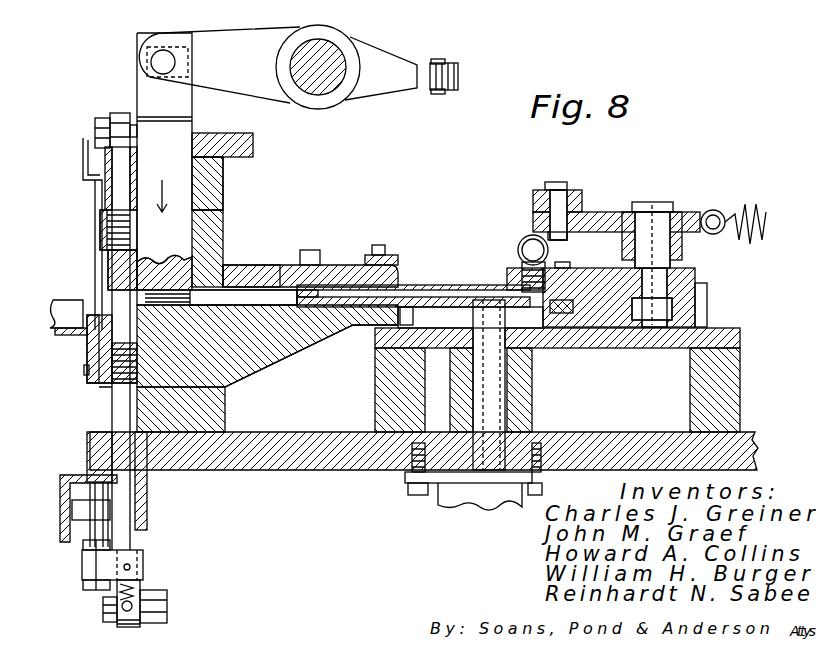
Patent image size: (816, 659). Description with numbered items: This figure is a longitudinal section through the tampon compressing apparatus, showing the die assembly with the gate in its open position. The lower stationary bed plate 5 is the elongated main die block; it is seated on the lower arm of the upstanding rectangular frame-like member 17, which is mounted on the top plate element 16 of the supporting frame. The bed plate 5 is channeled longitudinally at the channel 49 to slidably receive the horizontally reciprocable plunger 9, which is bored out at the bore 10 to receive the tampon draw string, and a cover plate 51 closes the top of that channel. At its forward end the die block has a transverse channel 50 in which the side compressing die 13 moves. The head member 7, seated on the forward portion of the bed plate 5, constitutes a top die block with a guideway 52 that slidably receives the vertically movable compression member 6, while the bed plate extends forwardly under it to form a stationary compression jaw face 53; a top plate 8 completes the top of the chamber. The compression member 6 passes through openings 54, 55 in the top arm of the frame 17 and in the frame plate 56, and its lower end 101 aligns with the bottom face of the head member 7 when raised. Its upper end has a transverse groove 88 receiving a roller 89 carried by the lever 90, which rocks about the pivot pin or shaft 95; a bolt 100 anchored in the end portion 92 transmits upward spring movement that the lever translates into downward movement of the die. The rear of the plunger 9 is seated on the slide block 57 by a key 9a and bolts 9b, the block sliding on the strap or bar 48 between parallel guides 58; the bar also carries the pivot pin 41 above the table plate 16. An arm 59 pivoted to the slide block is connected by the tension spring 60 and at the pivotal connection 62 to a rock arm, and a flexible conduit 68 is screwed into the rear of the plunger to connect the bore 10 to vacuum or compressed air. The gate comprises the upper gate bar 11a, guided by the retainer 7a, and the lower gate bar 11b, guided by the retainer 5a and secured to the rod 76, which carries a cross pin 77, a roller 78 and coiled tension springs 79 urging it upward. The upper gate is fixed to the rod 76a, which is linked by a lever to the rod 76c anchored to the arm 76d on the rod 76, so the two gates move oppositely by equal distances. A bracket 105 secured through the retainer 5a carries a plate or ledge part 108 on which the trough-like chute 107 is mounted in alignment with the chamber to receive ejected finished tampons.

The bed plate 5 is at (300, 345).
The retainer 5a is at (95, 390).
The compression member 6 is at (164, 161).
The head member 7 is at (188, 222).
The retainer 7a is at (101, 222).
The top plate 8 is at (328, 263).
The plunger 9 is at (424, 284).
The key 9a is at (545, 315).
The bolts 9b is at (568, 262).
The bore 10 is at (457, 288).
The upper gate bar 11a is at (108, 258).
The lower gate bar 11b is at (170, 345).
The side compressing die 13 is at (160, 306).
The top plate element 16 is at (655, 432).
The rectangular frame-like member 17 is at (226, 184).
The pivot pin 41 is at (507, 398).
The strap or bar 48 is at (632, 348).
The longitudinal channel 49 is at (290, 263).
The transverse channel 50 is at (215, 265).
The cover plate 51 is at (340, 262).
The guideway 52 is at (226, 218).
The stationary compression jaw face 53 is at (190, 306).
The opening 54 is at (226, 175).
The opening 55 is at (195, 133).
The frame plate 56 is at (255, 150).
The slide block 57 is at (582, 348).
The parallel guides 58 is at (707, 300).
The arm 59 is at (600, 212).
The tension spring 60 is at (725, 212).
The pivotal connection 62 is at (565, 183).
The flexible conduit 68 is at (522, 236).
The rod 76 is at (135, 492).
The rod 76a is at (120, 118).
The rod 76c is at (93, 197).
The arm 76d is at (145, 555).
The cross pin 77 is at (120, 620).
The roller 78 is at (160, 590).
The coiled tension springs 79 is at (118, 595).
The transverse groove 88 is at (150, 55).
The roller 89 is at (152, 68).
The lever 90 is at (250, 90).
The end portion 92 is at (460, 73).
The pivot pin or shaft 95 is at (322, 45).
The bolt 100 is at (447, 62).
The lower end 101 is at (160, 258).
The bracket 105 is at (88, 365).
The trough-like chute 107 is at (62, 285).
The plate or ledge part 108 is at (83, 334).